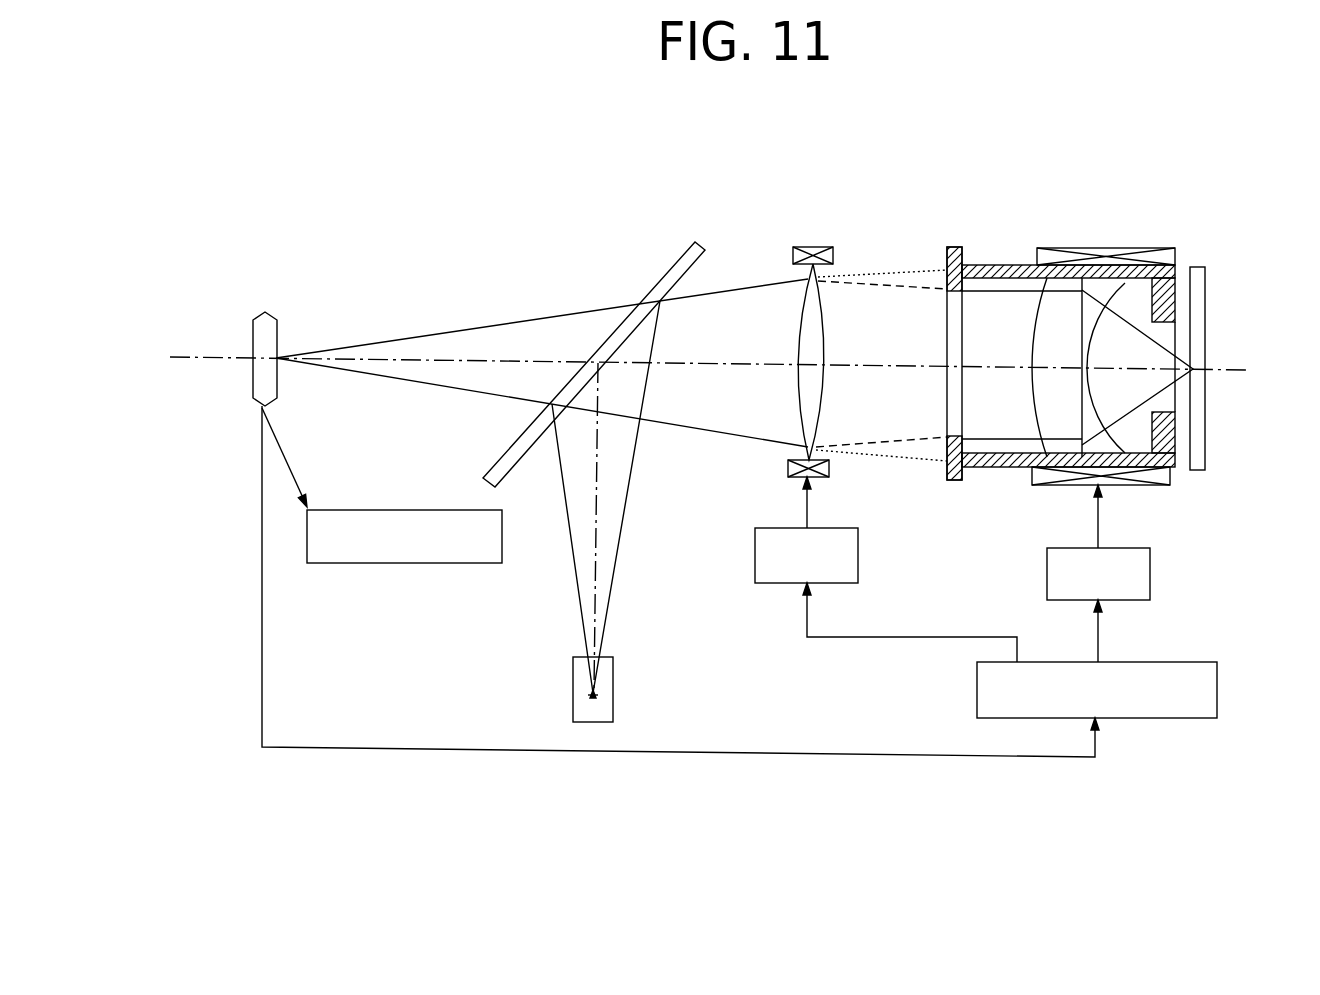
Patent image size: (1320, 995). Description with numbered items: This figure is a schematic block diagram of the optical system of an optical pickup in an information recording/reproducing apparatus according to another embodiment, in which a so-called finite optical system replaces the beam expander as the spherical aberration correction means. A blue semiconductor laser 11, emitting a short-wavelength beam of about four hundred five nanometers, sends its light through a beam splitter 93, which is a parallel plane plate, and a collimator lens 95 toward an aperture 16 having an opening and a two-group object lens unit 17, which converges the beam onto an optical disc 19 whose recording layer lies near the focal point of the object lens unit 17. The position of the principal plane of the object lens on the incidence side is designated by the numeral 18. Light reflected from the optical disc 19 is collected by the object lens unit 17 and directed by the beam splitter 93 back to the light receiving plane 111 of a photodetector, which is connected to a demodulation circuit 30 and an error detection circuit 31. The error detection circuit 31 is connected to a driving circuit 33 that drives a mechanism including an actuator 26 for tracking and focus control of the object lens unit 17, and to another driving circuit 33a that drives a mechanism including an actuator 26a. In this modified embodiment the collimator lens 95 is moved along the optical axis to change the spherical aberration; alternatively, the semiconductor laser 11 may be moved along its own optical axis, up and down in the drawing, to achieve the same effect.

The light receiving plane 111 is at (265, 310).
The demodulation circuit 30 is at (432, 508).
The beam splitter 93 is at (698, 240).
The collimator lens 95 is at (820, 273).
The actuator 26a is at (829, 470).
The semiconductor laser 11 is at (613, 670).
The driving circuit 33a is at (858, 542).
The driving circuit 33 is at (1150, 560).
The error detection circuit 31 is at (1217, 680).
The aperture 16 is at (953, 247).
The object lens unit 17 is at (1004, 265).
The position of the principal plane of the object lens 18 is at (1083, 240).
The optical disc 19 is at (1196, 267).
The actuator 26 is at (1152, 486).